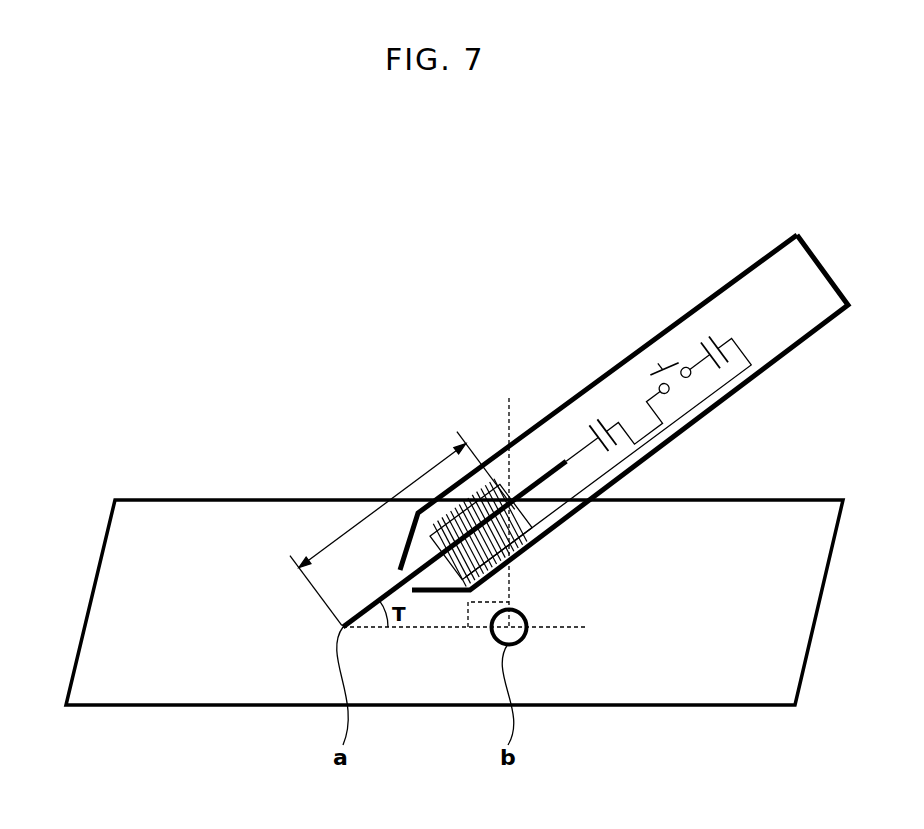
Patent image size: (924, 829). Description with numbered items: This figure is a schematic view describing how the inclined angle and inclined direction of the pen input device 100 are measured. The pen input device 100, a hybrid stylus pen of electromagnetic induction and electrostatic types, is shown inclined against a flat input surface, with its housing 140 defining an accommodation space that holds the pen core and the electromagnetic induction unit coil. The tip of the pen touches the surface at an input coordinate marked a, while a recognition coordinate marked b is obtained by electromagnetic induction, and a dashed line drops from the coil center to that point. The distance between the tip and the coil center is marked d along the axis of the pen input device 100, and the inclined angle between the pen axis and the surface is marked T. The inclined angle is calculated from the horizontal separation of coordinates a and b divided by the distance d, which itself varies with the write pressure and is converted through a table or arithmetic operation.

The pen input device 100 is at (580, 429).
The housing 140 is at (722, 289).